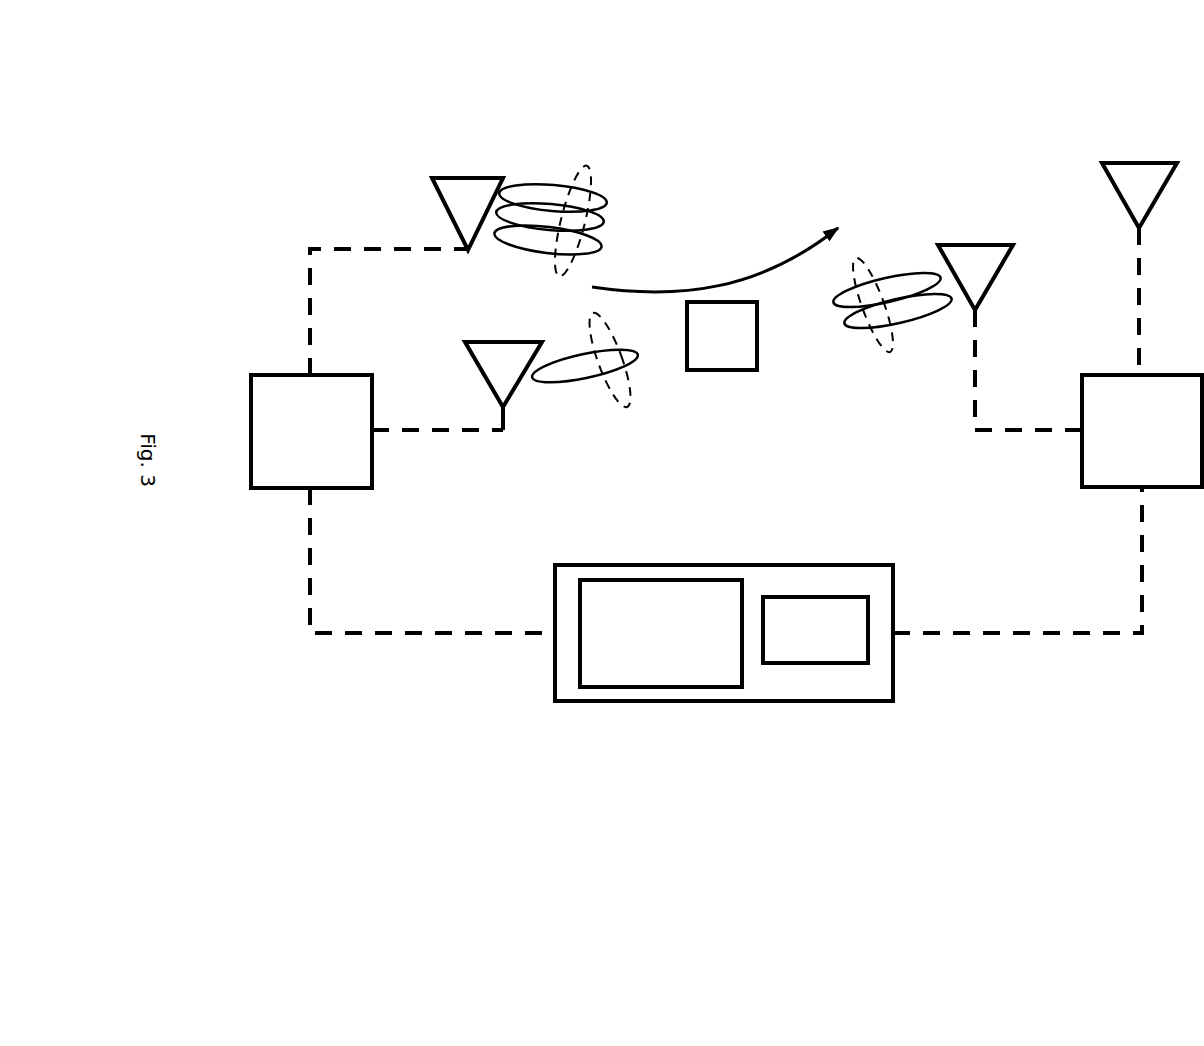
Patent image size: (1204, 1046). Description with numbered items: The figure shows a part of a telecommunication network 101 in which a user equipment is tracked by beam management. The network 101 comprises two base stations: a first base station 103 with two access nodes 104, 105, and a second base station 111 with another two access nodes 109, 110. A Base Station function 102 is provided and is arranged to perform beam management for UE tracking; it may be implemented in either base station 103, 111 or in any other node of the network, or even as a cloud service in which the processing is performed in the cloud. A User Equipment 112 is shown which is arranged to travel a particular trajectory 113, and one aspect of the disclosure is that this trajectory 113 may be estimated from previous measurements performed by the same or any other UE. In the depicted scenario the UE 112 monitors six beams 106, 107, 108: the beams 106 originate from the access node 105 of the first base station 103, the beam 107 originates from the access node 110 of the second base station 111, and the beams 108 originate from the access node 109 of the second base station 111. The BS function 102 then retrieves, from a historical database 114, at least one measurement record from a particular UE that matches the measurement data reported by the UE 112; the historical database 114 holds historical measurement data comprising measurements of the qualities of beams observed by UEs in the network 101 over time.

The telecommunication network 101 is at (428, 828).
The Base Station function 102 is at (820, 705).
The first base station 103 is at (1105, 488).
The access node 104 is at (1142, 163).
The access node 105 is at (975, 245).
The beams 106 is at (888, 352).
The beam 107 is at (628, 408).
The beams 108 is at (603, 157).
The access node 109 is at (445, 210).
The access node 110 is at (502, 410).
The second base station 111 is at (305, 489).
The User Equipment 112 is at (735, 302).
The trajectory 113 is at (817, 240).
The historical database 114 is at (663, 689).